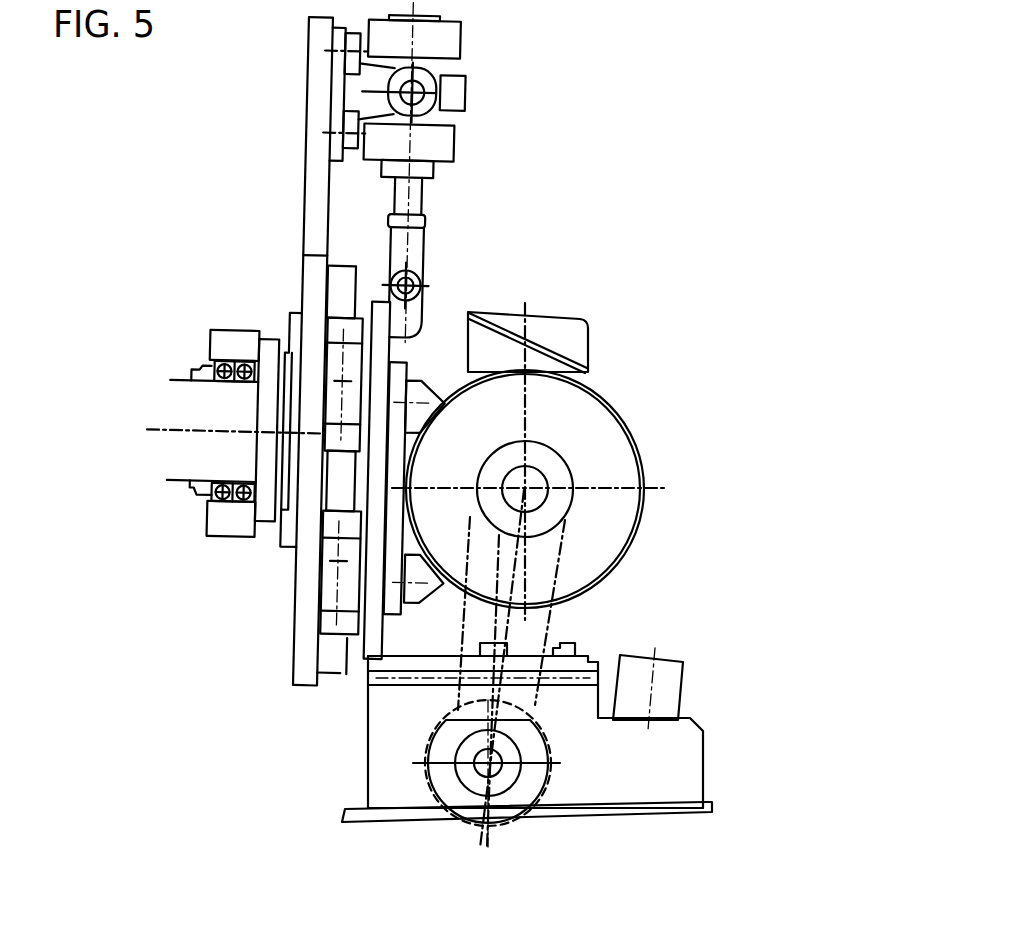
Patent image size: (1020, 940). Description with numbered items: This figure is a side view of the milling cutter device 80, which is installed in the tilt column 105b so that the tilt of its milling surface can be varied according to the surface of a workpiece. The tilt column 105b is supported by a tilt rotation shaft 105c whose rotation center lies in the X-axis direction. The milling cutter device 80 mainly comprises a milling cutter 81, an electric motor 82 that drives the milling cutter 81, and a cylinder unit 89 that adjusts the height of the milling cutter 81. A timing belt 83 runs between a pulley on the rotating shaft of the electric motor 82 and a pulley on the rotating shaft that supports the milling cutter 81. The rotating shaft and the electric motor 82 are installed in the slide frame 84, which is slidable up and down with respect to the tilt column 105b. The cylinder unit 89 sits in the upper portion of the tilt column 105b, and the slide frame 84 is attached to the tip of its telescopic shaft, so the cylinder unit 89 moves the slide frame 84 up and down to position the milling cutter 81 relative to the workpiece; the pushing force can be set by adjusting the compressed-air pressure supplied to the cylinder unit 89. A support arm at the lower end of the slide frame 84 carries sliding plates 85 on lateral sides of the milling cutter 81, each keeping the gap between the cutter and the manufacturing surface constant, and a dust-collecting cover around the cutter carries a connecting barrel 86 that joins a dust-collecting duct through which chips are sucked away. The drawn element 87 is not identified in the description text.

The milling cutter device 80 is at (662, 212).
The milling cutter 81 is at (506, 800).
The electric motor 82 is at (608, 400).
The timing belt 83 is at (550, 615).
The slide frame 84 is at (367, 632).
The sliding plate 85 is at (605, 812).
The connecting barrel 86 is at (705, 777).
The motor 87 is at (685, 679).
The cylinder unit 89 is at (455, 35).
The tilt column 105b is at (310, 177).
The tilt rotation shaft 105c is at (190, 417).